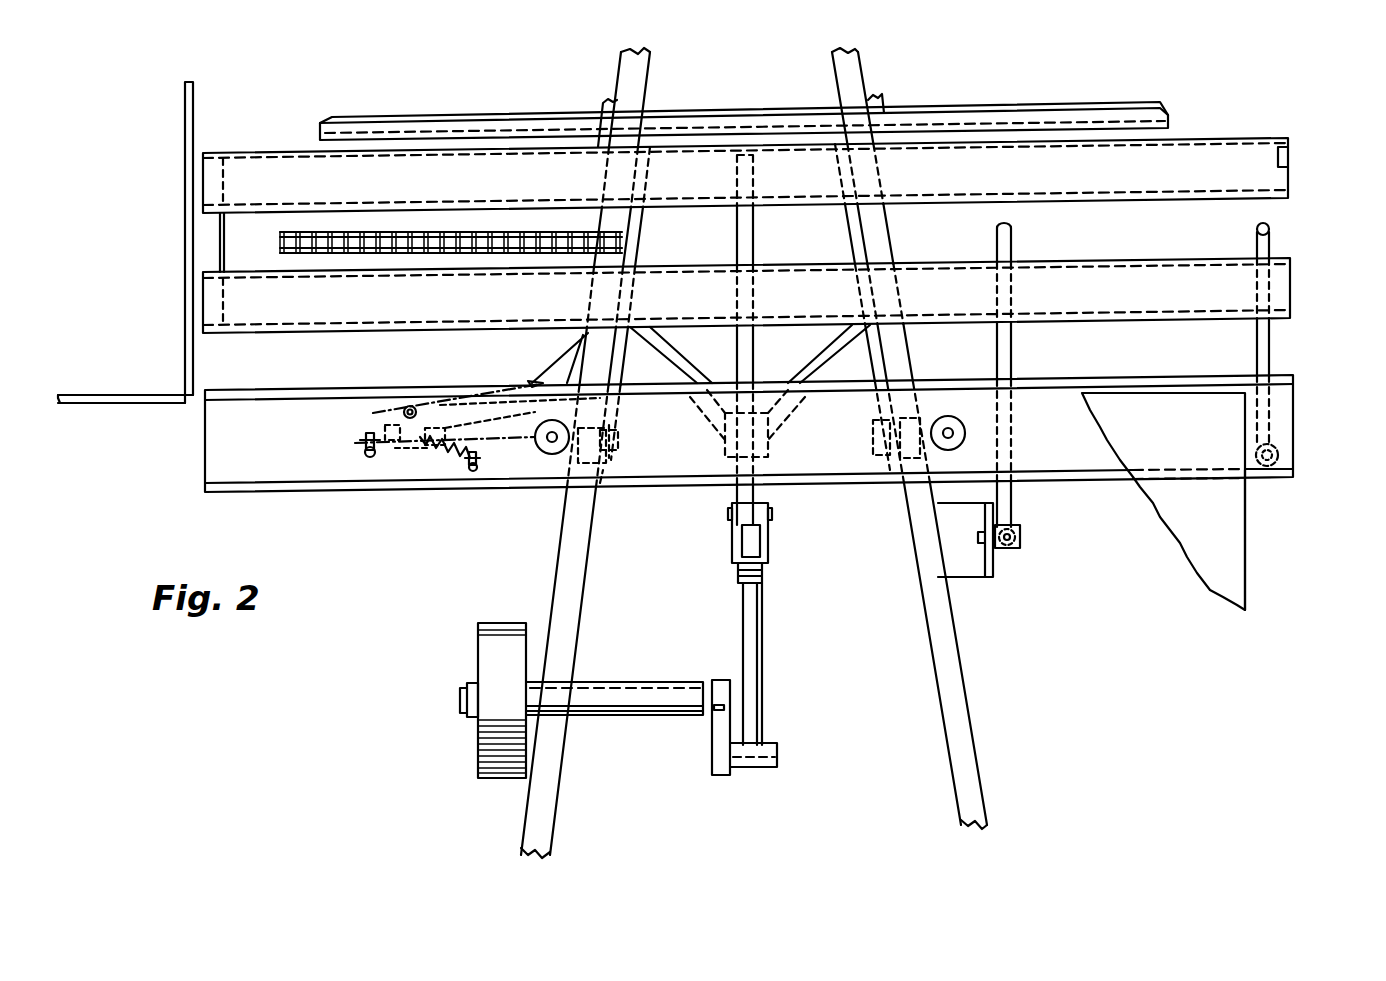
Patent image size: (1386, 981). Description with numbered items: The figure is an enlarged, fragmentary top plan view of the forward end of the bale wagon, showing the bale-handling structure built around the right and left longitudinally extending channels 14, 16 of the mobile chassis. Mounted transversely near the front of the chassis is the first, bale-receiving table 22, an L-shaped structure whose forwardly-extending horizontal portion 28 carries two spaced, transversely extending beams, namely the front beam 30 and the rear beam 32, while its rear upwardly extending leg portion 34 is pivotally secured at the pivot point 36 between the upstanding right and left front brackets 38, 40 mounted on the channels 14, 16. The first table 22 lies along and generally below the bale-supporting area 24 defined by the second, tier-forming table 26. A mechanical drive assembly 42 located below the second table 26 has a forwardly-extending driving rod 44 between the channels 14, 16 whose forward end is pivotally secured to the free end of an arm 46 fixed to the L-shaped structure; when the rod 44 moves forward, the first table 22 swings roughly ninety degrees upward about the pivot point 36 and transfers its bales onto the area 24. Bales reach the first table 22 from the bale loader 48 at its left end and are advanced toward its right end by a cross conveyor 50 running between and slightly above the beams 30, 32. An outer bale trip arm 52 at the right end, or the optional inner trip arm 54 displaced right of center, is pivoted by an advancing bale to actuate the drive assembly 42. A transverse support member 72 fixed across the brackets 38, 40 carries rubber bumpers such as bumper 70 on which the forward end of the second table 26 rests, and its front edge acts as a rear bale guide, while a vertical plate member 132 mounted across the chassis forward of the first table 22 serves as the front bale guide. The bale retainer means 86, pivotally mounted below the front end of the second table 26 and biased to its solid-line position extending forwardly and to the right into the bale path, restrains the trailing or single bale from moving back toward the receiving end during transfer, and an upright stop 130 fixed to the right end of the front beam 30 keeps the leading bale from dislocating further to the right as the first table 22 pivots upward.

The right longitudinal channel 14 is at (957, 628).
The left longitudinal channel 16 is at (577, 636).
The first bale-receiving table 22 is at (213, 153).
The bale-supporting area 24 is at (1232, 527).
The second tier-forming table 26 is at (1247, 576).
The horizontal portion 28 is at (642, 242).
The front beam 30 is at (1198, 138).
The rear beam 32 is at (1124, 256).
The rear leg portion 34 is at (622, 458).
The pivot point 36 is at (622, 440).
The right front bracket 38 is at (897, 472).
The left front bracket 40 is at (600, 483).
The mechanical drive assembly 42 is at (478, 757).
The driving rod 44 is at (763, 638).
The arm 46 is at (757, 495).
The bale loader 48 is at (176, 404).
The cross conveyor 50 is at (320, 232).
The outer bale trip arm 52 is at (1270, 352).
The inner trip arm 54 is at (1012, 352).
The rubber bumper 70 is at (552, 454).
The transverse support member 72 is at (205, 462).
The bale retainer means 86 is at (400, 452).
The upright stop 130 is at (1283, 156).
The vertical plate member 132 is at (1092, 103).